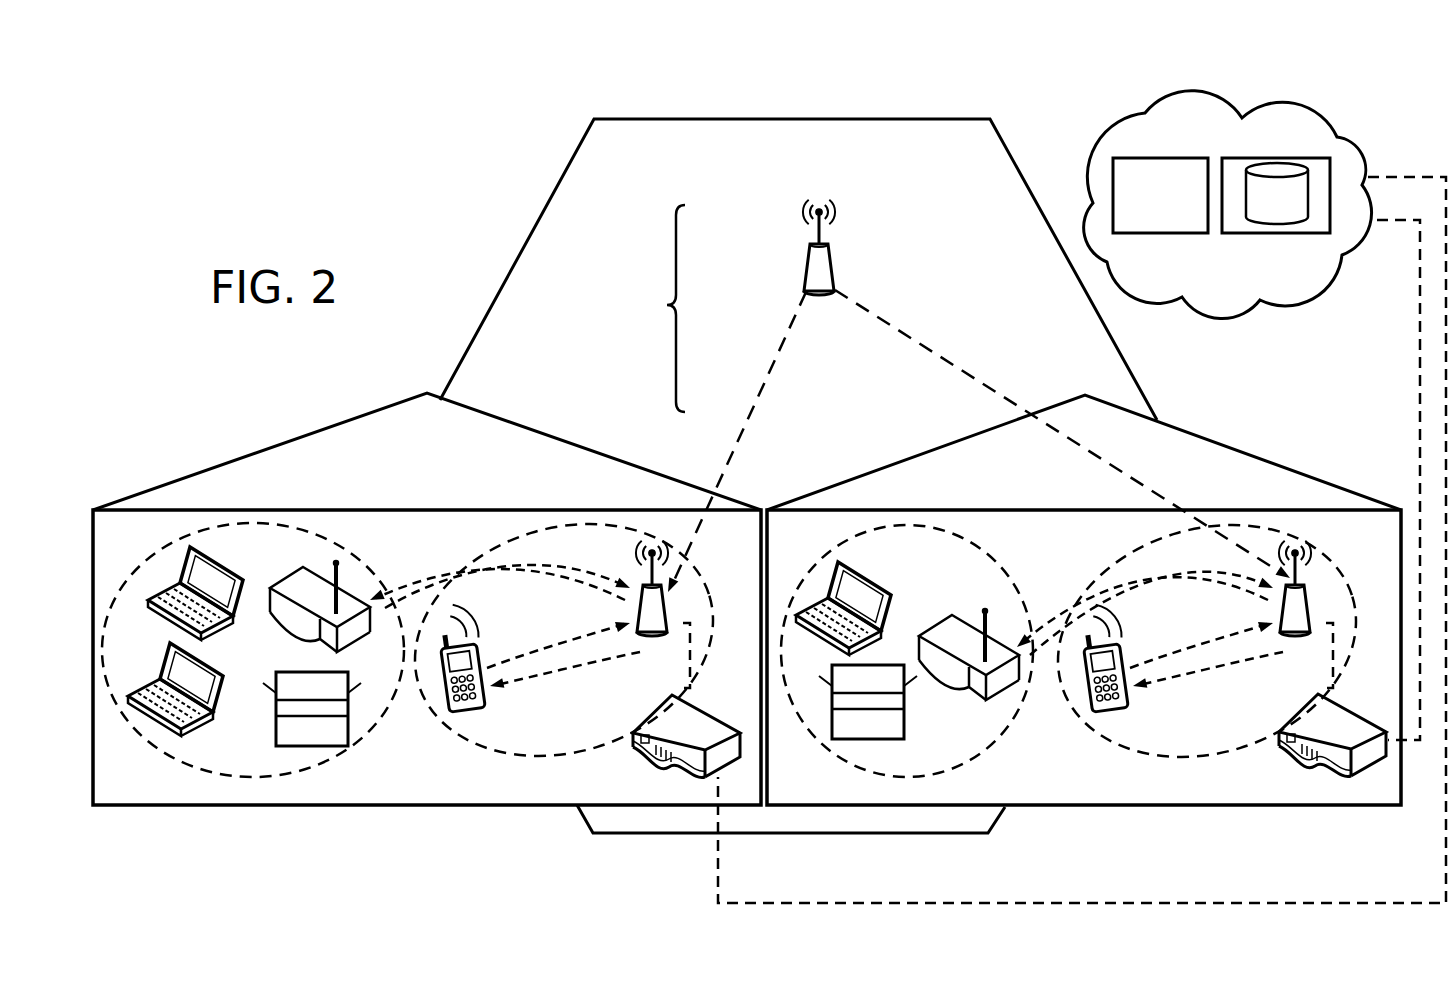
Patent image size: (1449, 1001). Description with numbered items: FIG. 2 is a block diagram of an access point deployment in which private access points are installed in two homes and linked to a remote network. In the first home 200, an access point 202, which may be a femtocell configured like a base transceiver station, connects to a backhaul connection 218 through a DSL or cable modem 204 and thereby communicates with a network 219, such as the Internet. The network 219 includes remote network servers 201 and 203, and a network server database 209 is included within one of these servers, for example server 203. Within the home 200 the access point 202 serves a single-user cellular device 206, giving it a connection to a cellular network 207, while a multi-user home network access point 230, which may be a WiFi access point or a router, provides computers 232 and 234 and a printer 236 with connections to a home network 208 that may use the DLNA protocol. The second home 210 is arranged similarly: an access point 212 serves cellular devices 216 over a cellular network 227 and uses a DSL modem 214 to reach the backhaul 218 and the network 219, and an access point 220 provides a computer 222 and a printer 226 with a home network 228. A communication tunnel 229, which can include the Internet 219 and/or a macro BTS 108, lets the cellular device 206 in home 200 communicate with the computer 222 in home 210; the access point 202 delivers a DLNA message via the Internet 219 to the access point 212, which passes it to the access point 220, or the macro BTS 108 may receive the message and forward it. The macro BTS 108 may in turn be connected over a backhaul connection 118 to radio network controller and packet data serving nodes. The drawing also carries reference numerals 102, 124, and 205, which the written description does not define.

The network environment 102 is at (547, 180).
The macro BTS 108 is at (802, 274).
The backhaul connection 118 is at (693, 688).
The wireless link 124 is at (462, 557).
The home 200 is at (547, 807).
The network server 201 is at (1137, 202).
The access point 202 is at (647, 636).
The network server 203 is at (1273, 234).
The DSL or cable modem 204 is at (636, 733).
The wireless backhaul link 205 is at (758, 401).
The single-user cellular device 206 is at (445, 702).
The cellular network 207 is at (488, 755).
The home network 208 is at (308, 768).
The network server database 209 is at (1255, 213).
The home 210 is at (1227, 808).
The access point 212 is at (1292, 636).
The DSL modem 214 is at (1282, 733).
The cellular devices 216 is at (1091, 702).
The backhaul connection 218 is at (1420, 350).
The network 219 is at (1160, 105).
The access point 220 is at (928, 630).
The computer 222 is at (858, 578).
The printer 226 is at (904, 702).
The cellular network 227 is at (1112, 755).
The home network 228 is at (1000, 735).
The communication tunnel 229 is at (647, 308).
The multi-user home network access point 230 is at (283, 586).
The computer 232 is at (232, 607).
The computer 234 is at (223, 705).
The printer 236 is at (350, 708).